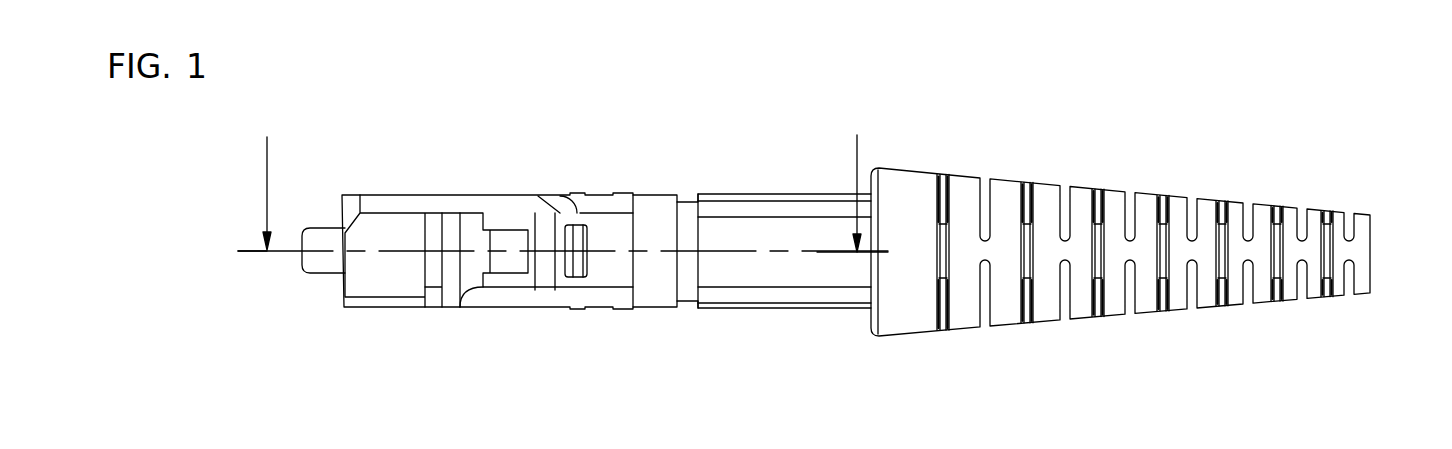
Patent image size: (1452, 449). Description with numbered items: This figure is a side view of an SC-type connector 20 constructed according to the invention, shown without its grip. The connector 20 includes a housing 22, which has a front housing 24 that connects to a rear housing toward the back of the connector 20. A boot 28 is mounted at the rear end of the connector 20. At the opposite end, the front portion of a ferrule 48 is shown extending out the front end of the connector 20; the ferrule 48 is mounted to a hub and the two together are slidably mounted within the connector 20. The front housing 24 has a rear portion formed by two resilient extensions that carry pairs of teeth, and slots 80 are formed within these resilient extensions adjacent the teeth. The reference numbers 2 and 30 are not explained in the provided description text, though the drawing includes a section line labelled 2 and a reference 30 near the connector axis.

The section line 2- 2 is at (563, 180).
The SC-type connector 20 is at (620, 130).
The housing 22 is at (540, 177).
The front housing 24 is at (455, 197).
The boot 28 is at (920, 180).
The optical fiber 30 is at (250, 252).
The ferrule 48 is at (320, 228).
The slots 80 is at (575, 277).